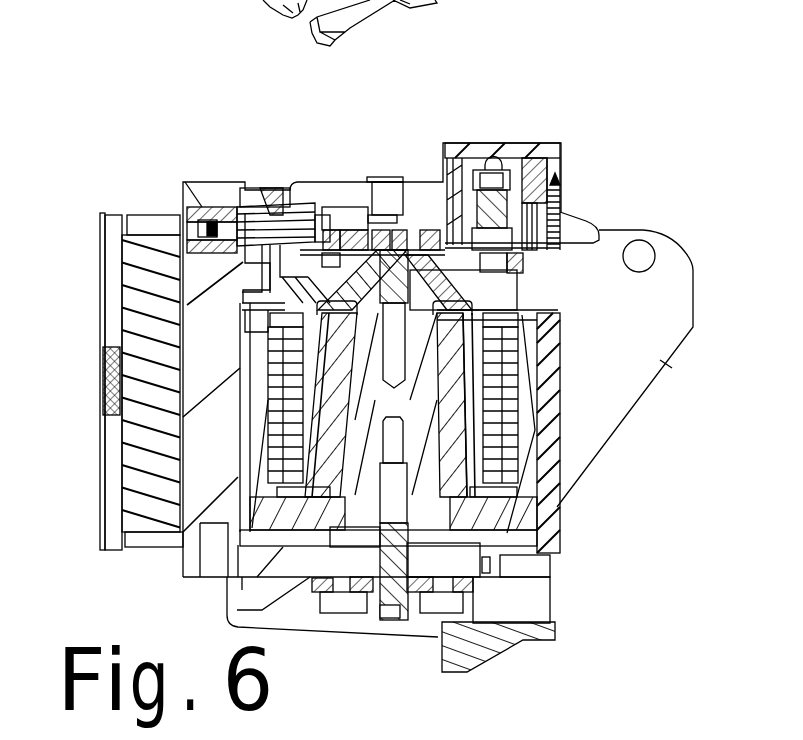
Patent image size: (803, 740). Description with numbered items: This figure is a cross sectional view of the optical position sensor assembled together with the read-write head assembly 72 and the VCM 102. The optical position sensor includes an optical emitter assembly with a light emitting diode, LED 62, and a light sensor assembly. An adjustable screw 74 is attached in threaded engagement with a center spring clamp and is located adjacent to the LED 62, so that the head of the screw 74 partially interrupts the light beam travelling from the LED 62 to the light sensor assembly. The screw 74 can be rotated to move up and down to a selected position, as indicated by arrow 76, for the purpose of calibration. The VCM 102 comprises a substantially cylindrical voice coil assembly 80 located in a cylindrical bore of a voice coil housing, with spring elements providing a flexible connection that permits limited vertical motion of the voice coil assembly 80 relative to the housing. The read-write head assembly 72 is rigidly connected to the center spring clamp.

The LED 62 is at (493, 160).
The read-write head assembly 72 is at (100, 213).
The adjustable screw 74 is at (508, 173).
The arrow 76 is at (607, 117).
The voice coil assembly 80 is at (145, 78).
The VCM 102 is at (562, 449).